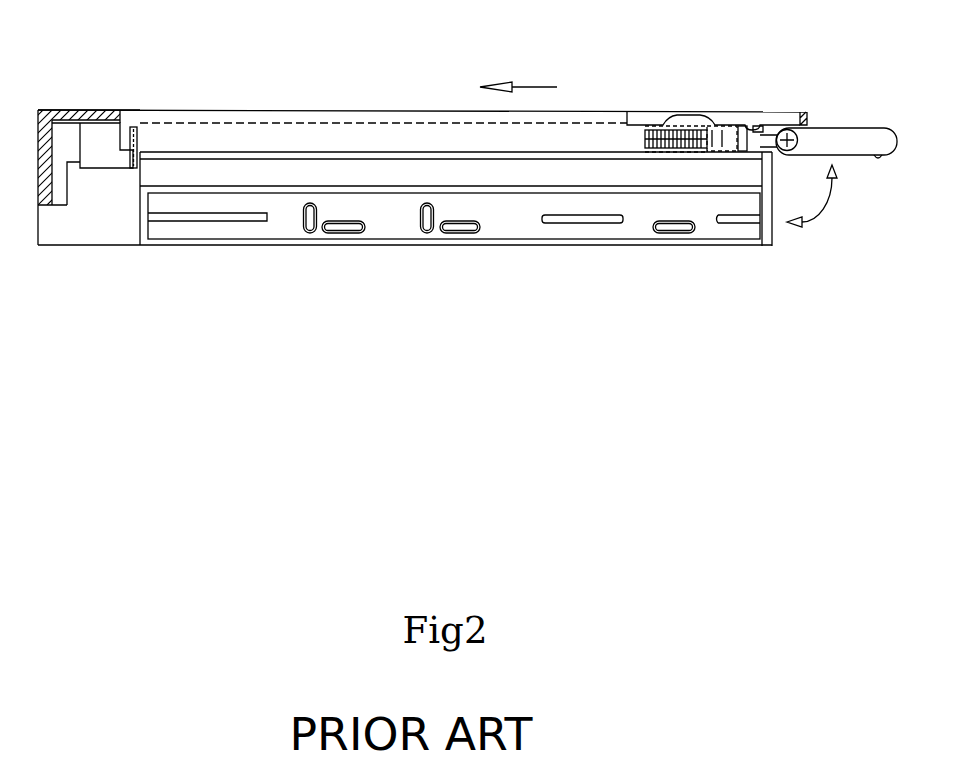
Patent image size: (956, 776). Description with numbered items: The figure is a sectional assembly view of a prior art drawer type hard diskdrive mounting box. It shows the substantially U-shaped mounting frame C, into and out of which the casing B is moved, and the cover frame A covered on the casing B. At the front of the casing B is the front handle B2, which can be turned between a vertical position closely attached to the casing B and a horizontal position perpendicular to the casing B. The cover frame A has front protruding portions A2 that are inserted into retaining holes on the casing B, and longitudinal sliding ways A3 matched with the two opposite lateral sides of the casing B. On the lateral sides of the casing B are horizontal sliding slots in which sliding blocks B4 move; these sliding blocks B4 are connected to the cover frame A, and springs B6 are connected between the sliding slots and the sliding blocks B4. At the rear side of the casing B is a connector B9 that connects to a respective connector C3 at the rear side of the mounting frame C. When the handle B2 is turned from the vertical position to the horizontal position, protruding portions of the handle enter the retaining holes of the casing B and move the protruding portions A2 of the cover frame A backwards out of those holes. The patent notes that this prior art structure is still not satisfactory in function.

The cover frame A is at (330, 110).
The front protruding portion A2 is at (760, 112).
The longitudinal sliding way A3 is at (740, 128).
The casing B is at (502, 232).
The front handle B2 is at (860, 146).
The sliding block B4 is at (715, 130).
The spring B6 is at (660, 135).
The connector B9 is at (135, 127).
The mounting frame C is at (45, 238).
The connector C3 is at (93, 158).